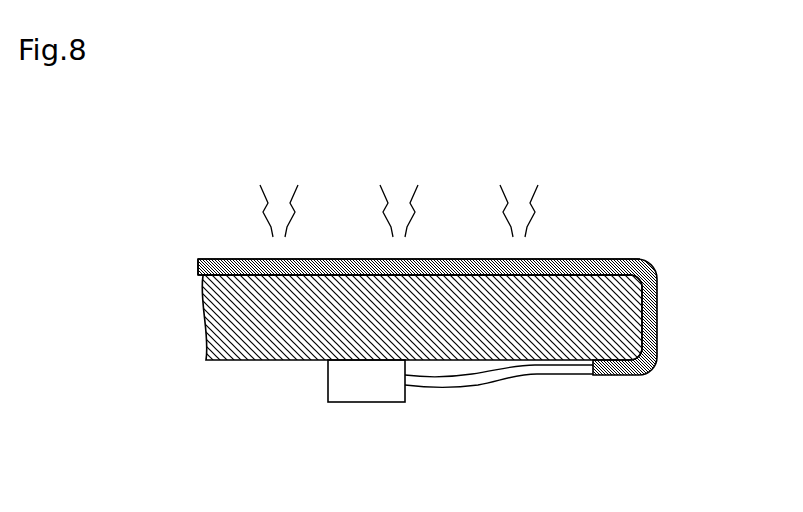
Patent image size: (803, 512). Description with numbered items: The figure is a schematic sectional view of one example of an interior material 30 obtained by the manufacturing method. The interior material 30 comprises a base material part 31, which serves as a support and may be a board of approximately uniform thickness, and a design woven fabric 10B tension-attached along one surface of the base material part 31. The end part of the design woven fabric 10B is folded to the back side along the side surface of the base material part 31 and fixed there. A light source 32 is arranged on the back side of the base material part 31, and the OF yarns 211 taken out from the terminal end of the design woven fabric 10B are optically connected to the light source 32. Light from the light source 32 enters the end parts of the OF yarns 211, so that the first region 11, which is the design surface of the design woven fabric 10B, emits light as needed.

The interior material 30 is at (226, 194).
The design woven fabric 10B is at (553, 258).
The first region 11 is at (311, 258).
The base material part 31 is at (237, 352).
The light source 32 is at (356, 393).
The OF yarns 211 is at (462, 384).